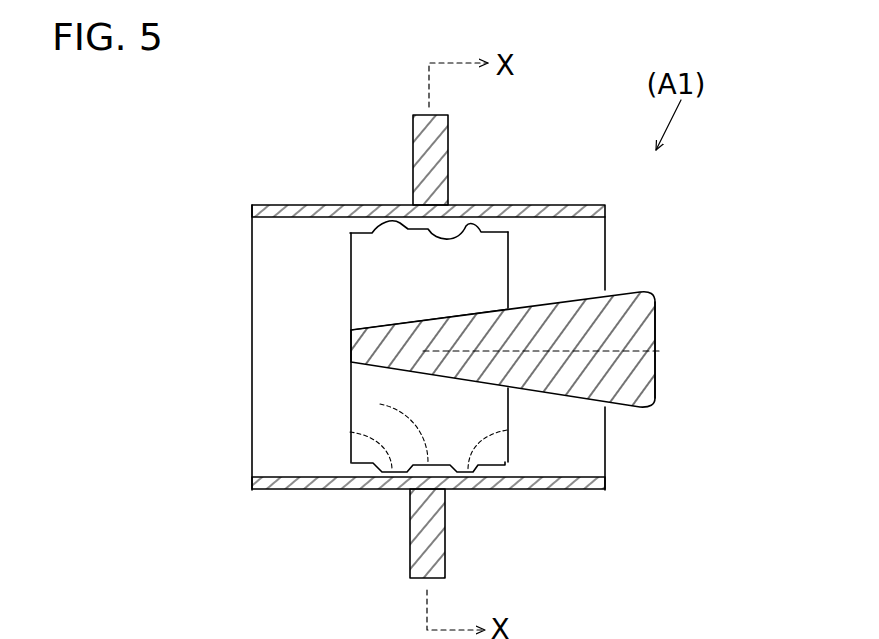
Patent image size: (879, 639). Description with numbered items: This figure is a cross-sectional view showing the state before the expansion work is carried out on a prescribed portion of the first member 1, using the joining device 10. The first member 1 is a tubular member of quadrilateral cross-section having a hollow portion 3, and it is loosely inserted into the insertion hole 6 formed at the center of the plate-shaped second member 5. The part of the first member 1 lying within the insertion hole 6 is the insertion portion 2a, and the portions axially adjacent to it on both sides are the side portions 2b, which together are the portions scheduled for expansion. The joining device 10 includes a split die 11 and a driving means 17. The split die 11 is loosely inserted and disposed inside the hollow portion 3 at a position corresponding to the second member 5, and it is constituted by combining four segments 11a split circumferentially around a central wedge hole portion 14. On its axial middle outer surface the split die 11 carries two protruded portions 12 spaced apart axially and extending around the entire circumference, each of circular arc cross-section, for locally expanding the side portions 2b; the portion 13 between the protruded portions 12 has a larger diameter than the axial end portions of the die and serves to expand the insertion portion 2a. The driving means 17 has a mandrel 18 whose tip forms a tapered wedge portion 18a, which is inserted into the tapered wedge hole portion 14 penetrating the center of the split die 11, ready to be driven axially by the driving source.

The first member 1 is at (585, 206).
The insertion portion 2a is at (444, 518).
The side portions 2b is at (393, 491).
The hollow portion 3 is at (287, 240).
The second member 5 is at (427, 153).
The insertion hole 6 is at (478, 216).
The joining device 10 is at (633, 431).
The split die 11 is at (509, 272).
The segments 11a is at (375, 295).
The protruded portions 12 is at (350, 432).
The portion located between protruded portions 13 is at (380, 404).
The wedge hole portion 14 is at (413, 318).
The driving means 17 is at (648, 291).
The mandrel 18 is at (619, 318).
The wedge portion 18a is at (660, 352).